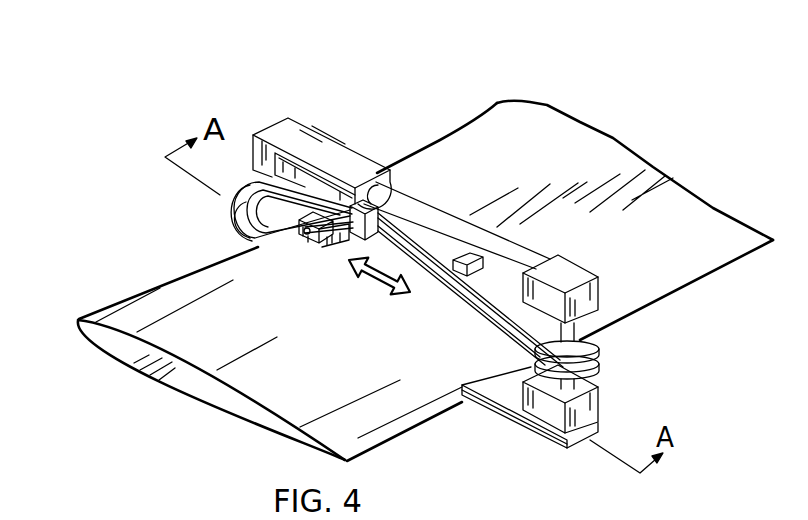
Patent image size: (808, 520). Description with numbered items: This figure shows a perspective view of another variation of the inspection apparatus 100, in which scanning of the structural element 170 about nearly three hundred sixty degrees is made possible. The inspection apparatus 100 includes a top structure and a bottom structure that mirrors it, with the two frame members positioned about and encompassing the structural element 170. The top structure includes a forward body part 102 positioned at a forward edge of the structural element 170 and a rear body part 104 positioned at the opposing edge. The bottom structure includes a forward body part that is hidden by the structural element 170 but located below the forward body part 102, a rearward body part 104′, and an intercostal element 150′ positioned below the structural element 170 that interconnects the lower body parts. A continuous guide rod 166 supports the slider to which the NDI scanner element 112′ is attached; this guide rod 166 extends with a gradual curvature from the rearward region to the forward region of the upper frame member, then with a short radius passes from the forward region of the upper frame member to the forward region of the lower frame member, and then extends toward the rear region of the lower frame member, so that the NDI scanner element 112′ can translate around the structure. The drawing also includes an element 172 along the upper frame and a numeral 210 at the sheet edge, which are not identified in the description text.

The inspection apparatus 100 is at (339, 116).
The forward body part 102 is at (287, 127).
The rear body part 104 is at (568, 262).
The rearward body part 104′ is at (587, 412).
The NDI scanner element 112′ is at (321, 250).
The intercostal element 150′ is at (508, 383).
The continuous guide rod 166 is at (530, 330).
The structural element 170 is at (613, 138).
The tube 172 is at (328, 158).
The reference numeral (adjacent figure) 210 is at (665, 514).